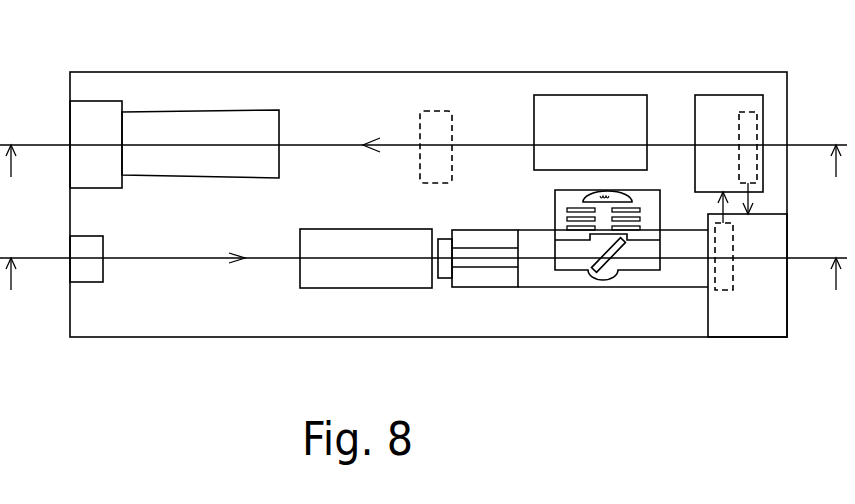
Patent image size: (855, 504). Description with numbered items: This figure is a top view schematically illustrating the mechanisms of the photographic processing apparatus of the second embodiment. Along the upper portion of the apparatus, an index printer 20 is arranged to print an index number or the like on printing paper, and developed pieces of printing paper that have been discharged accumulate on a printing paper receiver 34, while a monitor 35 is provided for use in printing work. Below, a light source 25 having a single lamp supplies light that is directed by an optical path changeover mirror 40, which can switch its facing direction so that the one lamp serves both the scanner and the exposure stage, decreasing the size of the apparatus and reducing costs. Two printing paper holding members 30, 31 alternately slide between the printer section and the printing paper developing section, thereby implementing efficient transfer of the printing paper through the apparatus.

The index printer 20 is at (569, 110).
The light source 25 is at (555, 266).
The printing paper holding member 30 is at (726, 290).
The printing paper holding member 31 is at (747, 120).
The printing paper receiver 34 is at (192, 145).
The monitor 35 is at (717, 107).
The optical path changeover mirror 40 is at (613, 250).